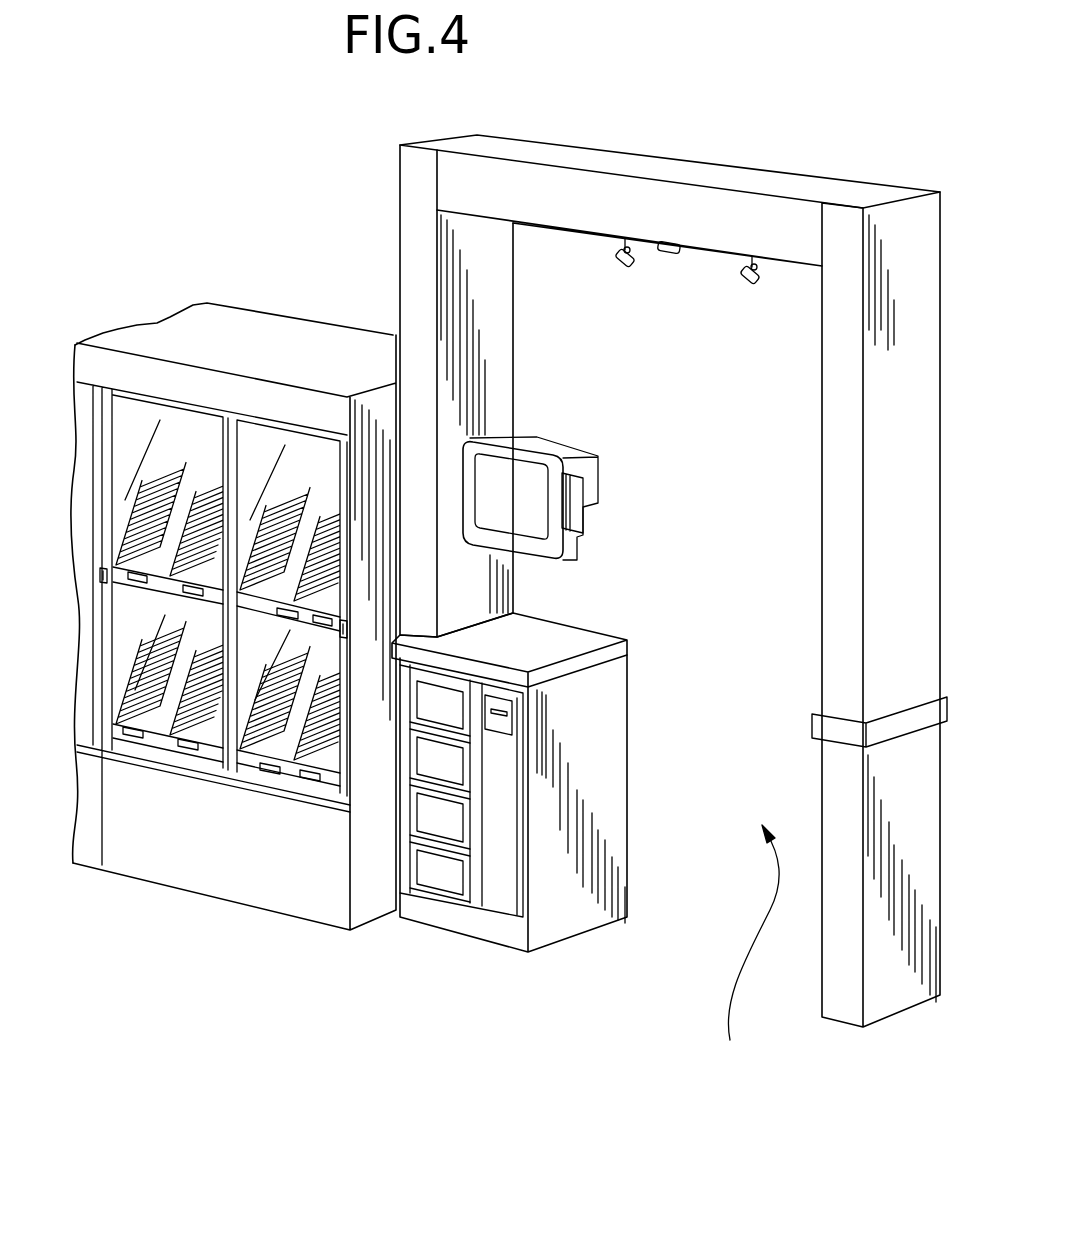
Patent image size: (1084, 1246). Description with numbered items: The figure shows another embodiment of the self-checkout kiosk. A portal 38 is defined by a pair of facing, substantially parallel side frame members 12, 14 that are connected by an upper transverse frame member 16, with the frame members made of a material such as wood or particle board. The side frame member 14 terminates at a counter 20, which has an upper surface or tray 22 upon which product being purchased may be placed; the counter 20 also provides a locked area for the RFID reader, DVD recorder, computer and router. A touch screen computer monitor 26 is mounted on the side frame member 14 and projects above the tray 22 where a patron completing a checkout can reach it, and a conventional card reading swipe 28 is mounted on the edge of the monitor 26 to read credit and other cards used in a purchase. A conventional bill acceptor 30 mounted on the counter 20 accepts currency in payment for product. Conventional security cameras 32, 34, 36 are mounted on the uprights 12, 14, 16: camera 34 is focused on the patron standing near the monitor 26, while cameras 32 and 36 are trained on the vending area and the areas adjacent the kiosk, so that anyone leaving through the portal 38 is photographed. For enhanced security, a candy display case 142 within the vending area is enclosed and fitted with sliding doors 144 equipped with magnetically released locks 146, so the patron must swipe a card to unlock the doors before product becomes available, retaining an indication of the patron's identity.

The side frame member 12 is at (892, 550).
The side frame member 14 is at (500, 325).
The upper transverse frame member 16 is at (762, 178).
The counter 20 is at (620, 690).
The tray 22 is at (597, 648).
The touch screen computer monitor 26 is at (533, 473).
The card reading swipe 28 is at (580, 503).
The bill acceptor 30 is at (500, 735).
The security camera 32 is at (757, 287).
The security camera 34 is at (675, 253).
The security camera 36 is at (627, 268).
The portal 38 is at (748, 954).
The candy display case 142 is at (255, 590).
The sliding doors 144 is at (287, 752).
The magnetically released locks 146 is at (346, 622).